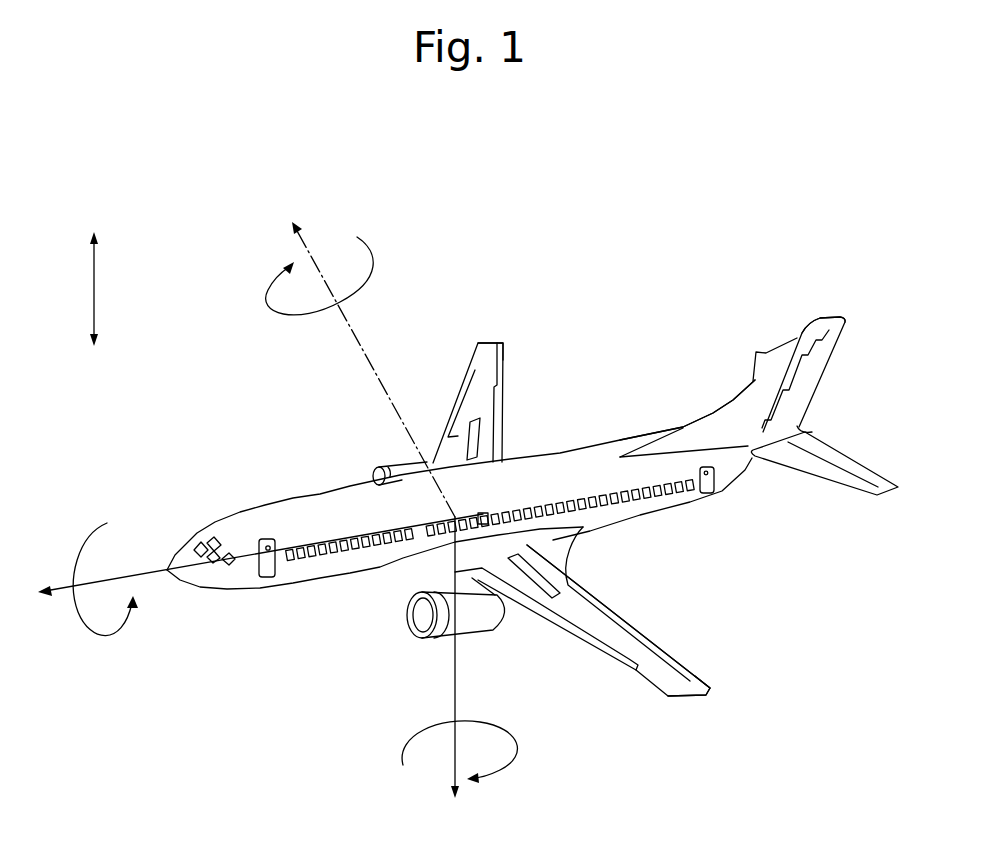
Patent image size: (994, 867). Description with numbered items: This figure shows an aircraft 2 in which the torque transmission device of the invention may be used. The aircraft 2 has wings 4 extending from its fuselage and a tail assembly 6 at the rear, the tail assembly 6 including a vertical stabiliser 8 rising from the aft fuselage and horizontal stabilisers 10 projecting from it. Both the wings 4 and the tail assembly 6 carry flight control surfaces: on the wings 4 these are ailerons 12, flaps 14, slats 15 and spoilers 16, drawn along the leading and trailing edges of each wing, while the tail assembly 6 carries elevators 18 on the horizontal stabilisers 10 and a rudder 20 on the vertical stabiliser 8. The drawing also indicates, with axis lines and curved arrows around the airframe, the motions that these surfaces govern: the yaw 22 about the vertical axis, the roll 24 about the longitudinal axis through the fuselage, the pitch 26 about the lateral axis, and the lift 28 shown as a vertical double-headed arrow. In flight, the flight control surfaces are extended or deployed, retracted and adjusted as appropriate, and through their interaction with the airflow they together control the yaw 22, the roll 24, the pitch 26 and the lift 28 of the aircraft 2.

The aircraft 2 is at (660, 184).
The wings 4 is at (482, 344).
The tail assembly 6 is at (799, 330).
The vertical stabiliser 8 is at (733, 413).
The horizontal stabilisers 10 is at (757, 351).
The ailerons 12 is at (505, 351).
The flaps 14 is at (503, 400).
The slats 15 is at (465, 382).
The spoilers 16 is at (478, 430).
The elevators 18 is at (870, 474).
The rudder 20 is at (832, 346).
The yaw 22 is at (400, 740).
The roll 24 is at (108, 643).
The pitch 26 is at (281, 320).
The lift 28 is at (94, 277).